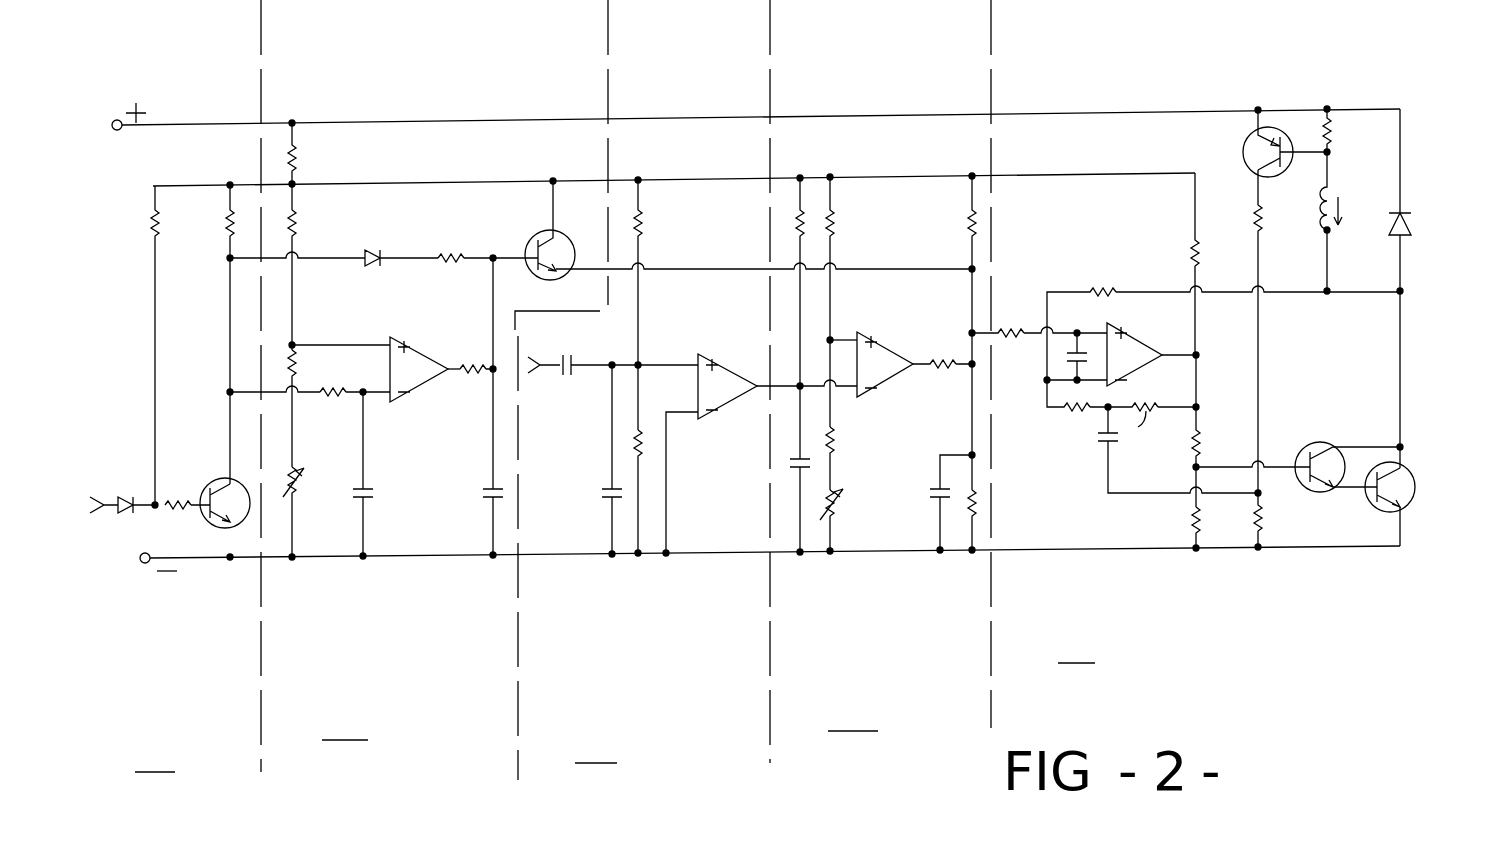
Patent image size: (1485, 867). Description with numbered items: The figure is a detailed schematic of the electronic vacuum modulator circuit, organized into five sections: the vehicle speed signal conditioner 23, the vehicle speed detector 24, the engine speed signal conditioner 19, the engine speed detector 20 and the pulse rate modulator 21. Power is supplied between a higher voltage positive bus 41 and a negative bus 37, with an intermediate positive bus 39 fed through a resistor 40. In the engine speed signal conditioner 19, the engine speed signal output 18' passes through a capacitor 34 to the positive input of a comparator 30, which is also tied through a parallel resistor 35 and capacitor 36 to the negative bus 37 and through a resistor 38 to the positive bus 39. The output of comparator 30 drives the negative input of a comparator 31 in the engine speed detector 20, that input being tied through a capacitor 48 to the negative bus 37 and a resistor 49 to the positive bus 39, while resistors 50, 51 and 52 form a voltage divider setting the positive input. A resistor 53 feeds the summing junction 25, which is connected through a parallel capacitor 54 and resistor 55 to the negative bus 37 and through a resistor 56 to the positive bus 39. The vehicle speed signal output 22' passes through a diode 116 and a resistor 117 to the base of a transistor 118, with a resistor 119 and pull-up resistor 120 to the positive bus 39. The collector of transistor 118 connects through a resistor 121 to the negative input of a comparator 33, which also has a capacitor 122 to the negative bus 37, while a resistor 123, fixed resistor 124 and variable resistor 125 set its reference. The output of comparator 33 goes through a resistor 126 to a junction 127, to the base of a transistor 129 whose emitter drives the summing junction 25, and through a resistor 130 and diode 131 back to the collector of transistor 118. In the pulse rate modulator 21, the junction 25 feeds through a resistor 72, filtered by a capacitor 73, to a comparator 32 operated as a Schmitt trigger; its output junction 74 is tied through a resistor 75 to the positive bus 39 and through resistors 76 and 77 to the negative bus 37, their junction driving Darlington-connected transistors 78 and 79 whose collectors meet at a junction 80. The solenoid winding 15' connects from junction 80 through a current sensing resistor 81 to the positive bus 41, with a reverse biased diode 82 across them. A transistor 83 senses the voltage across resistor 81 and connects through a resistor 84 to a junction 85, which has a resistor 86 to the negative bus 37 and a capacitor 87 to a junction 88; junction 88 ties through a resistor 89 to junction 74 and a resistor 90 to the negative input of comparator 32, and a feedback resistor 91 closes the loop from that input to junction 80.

The solenoid winding 15' is at (1357, 221).
The engine speed signal generator output 18' is at (553, 388).
The engine speed signal conditioner 19 is at (632, 686).
The engine speed detector 20 is at (861, 668).
The pulse rate modulator 21 is at (1178, 632).
The vehicle speed signal generator output 22' is at (119, 526).
The vehicle speed signal conditioner 23 is at (178, 693).
The vehicle speed detector 24 is at (354, 676).
The summing junction 25 is at (965, 325).
The comparator 30 is at (725, 342).
The comparator 31 is at (882, 340).
The comparator 32 is at (1143, 320).
The comparator 33 is at (413, 322).
The capacitor 34 is at (572, 362).
The resistor 35 is at (631, 440).
The capacitor 36 is at (606, 497).
The negative bus 37 is at (640, 556).
The resistor 38 is at (645, 225).
The positive bus 39 is at (530, 179).
The resistor 40 is at (300, 158).
The positive bus 41 is at (498, 120).
The capacitor 48 is at (792, 470).
The resistor 49 is at (793, 229).
The resistor 50 is at (838, 220).
The fixed resistor 51 is at (838, 433).
The variable resistor 52 is at (838, 518).
The resistor 53 is at (947, 372).
The capacitor 54 is at (925, 482).
The resistor 55 is at (982, 498).
The resistor 56 is at (965, 234).
The resistor 72 is at (1029, 310).
The capacitor 73 is at (1066, 360).
The junction 74 is at (1200, 355).
The resistor 75 is at (1190, 248).
The resistor 76 is at (1202, 442).
The resistor 77 is at (1188, 520).
The transistor 78 is at (1318, 443).
The transistor 79 is at (1418, 482).
The junction 80 is at (1403, 291).
The current sensing resistor 81 is at (1333, 130).
The diode 82 is at (1408, 230).
The transistor 83 is at (1245, 148).
The resistor 84 is at (1254, 215).
The junction 85 is at (1263, 496).
The resistor 86 is at (1264, 520).
The capacitor 87 is at (1098, 444).
The junction 88 is at (1112, 408).
The resistor 89 is at (1156, 432).
The resistor 90 is at (1072, 414).
The feedback resistor 91 is at (1103, 269).
The diode 116 is at (127, 496).
The resistor 117 is at (168, 515).
The transistor 118 is at (218, 484).
The resistor 119 is at (160, 222).
The pull-up resistor 120 is at (225, 232).
The resistor 121 is at (346, 414).
The capacitor 122 is at (372, 487).
The resistor 123 is at (300, 222).
The fixed resistor 124 is at (300, 365).
The variable resistor 125 is at (304, 502).
The resistor 126 is at (468, 380).
The junction 127 is at (478, 355).
The transistor 129 is at (528, 238).
The resistor 130 is at (461, 234).
The diode 131 is at (388, 234).